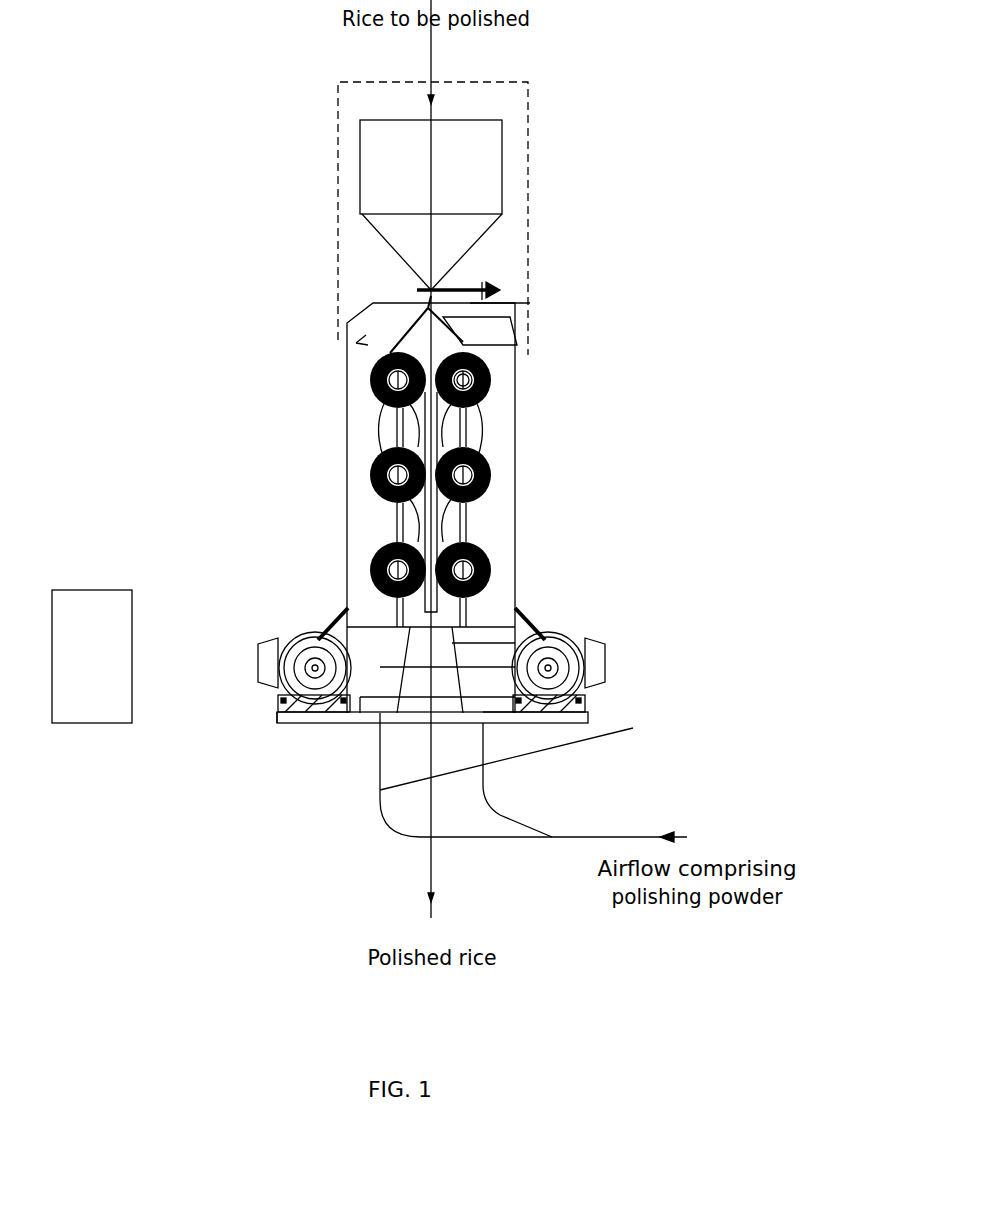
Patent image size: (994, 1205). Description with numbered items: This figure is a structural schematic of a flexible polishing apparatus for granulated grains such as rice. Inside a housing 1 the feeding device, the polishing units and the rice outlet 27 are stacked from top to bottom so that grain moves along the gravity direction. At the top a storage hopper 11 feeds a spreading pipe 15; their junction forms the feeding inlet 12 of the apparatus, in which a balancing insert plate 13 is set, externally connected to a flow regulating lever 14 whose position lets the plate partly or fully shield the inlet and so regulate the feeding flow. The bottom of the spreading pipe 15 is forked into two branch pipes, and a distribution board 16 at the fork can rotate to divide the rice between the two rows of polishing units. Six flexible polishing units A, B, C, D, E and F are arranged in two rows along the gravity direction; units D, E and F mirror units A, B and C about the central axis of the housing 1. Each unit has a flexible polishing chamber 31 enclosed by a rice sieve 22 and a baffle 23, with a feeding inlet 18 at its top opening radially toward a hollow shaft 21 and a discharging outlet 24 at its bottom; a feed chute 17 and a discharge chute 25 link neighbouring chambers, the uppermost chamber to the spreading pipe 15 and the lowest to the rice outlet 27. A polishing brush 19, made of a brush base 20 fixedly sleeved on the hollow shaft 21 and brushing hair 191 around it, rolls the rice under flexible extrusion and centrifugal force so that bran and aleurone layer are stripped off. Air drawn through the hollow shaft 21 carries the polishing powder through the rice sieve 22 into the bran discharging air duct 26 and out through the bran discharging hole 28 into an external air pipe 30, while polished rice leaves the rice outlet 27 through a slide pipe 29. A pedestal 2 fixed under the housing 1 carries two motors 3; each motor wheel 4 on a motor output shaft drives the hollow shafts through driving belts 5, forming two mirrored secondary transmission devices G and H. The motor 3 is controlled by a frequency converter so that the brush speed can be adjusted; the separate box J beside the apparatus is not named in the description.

The housing 1 is at (340, 220).
The pedestal 2 is at (277, 720).
The motor 3 is at (283, 647).
The motor wheel 4 is at (310, 653).
The driving belt 5 is at (343, 625).
The storage hopper 11 is at (437, 205).
The feeding inlet of polishing apparatus 12 is at (428, 292).
The balancing insert plate 13 is at (455, 300).
The flow regulating lever 14 is at (494, 288).
The spreading pipe 15 is at (505, 303).
The distribution board 16 is at (470, 318).
The feed chute 17 is at (470, 335).
The feeding inlet 18 is at (445, 353).
The polishing brush 19 is at (480, 380).
The brush base 20 is at (492, 386).
The hollow shaft 21 is at (488, 392).
The rice sieve 22 is at (484, 398).
The baffle 23 is at (480, 404).
The discharging outlet 24 is at (476, 410).
The discharge chute 25 is at (472, 416).
The bran discharging air duct 26 is at (468, 422).
The rice outlet 27 is at (467, 640).
The bran discharging hole 28 is at (485, 682).
The slide pipe 29 is at (432, 753).
The air pipe 30 is at (518, 813).
The brushing hair 191 is at (378, 375).
The flexible polishing chamber 31 is at (352, 392).
The flexible polishing unit A is at (390, 357).
The flexible polishing unit B is at (398, 450).
The flexible polishing unit C is at (398, 542).
The flexible polishing unit D is at (372, 352).
The flexible polishing unit E is at (382, 448).
The flexible polishing unit F is at (380, 545).
The secondary transmission device G is at (288, 722).
The secondary transmission device H is at (505, 705).
The control unit J is at (92, 656).